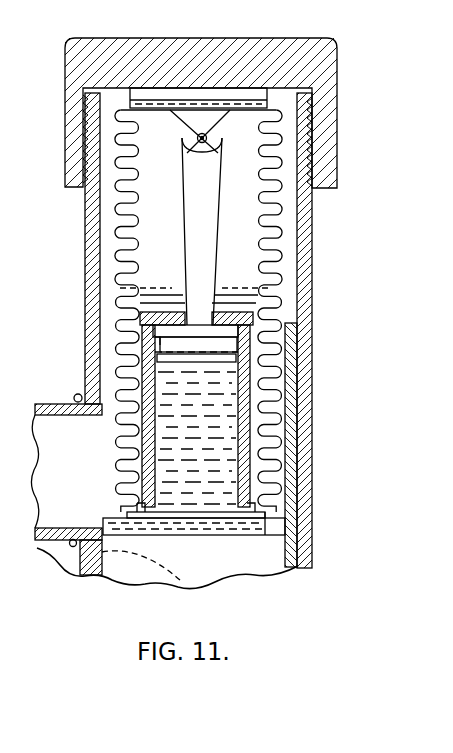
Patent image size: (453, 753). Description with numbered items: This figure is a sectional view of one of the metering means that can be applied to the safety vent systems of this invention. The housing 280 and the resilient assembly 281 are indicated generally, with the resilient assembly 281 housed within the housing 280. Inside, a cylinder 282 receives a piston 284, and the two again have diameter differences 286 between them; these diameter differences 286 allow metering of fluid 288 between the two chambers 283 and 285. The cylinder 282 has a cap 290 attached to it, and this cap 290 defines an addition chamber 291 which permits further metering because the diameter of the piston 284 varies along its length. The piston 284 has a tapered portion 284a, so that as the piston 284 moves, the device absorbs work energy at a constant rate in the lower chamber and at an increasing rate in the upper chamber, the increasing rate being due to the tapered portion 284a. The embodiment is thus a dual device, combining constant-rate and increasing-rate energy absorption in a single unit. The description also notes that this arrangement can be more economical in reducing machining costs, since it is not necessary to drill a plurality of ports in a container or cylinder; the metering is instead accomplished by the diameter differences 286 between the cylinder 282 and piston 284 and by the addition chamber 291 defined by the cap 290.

The housing 280 is at (345, 240).
The resilient assembly 281 is at (283, 277).
The cylinder 282 is at (249, 437).
The chamber 283 is at (223, 468).
The piston 284 is at (180, 245).
The tapered portion 284a is at (220, 227).
The chamber 285 is at (250, 158).
The diameter differences 286 is at (232, 348).
The fluid 288 is at (178, 285).
The cap 290 is at (258, 327).
The addition chamber 291 is at (142, 342).